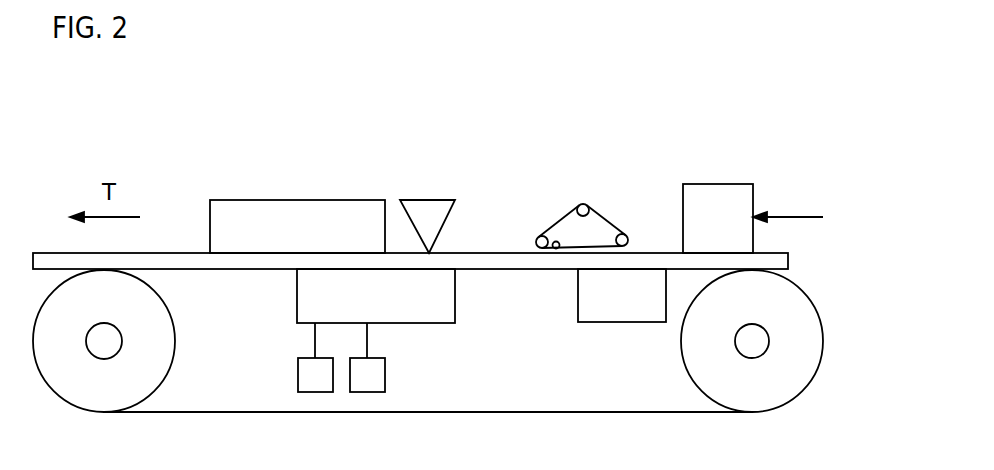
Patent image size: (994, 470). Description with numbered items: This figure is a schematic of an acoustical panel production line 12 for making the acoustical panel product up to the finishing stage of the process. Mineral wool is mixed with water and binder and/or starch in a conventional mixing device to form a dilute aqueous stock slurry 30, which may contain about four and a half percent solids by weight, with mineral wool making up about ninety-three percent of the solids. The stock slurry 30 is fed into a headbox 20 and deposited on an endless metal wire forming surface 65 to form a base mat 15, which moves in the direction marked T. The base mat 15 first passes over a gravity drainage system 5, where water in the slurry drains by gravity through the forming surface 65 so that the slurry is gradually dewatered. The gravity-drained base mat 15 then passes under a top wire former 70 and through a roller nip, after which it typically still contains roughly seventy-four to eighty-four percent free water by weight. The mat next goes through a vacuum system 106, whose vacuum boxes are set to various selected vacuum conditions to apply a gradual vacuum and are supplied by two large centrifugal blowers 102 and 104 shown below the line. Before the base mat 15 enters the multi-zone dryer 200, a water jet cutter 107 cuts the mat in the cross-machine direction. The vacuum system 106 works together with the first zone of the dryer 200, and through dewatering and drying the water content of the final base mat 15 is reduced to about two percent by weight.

The acoustical panel production line 12 is at (170, 223).
The base mat 15 is at (667, 249).
The endless metal wire forming surface 65 is at (593, 412).
The multi-zone dryer 200 is at (317, 235).
The water jet cutter 107 is at (437, 200).
The top wire former 70 is at (562, 218).
The headbox 20 is at (723, 240).
The stock slurry 30 is at (807, 209).
The vacuum system 106 is at (395, 303).
The centrifugal blower 104 is at (298, 392).
The centrifugal blower 102 is at (385, 375).
The gravity drainage system 5 is at (626, 306).